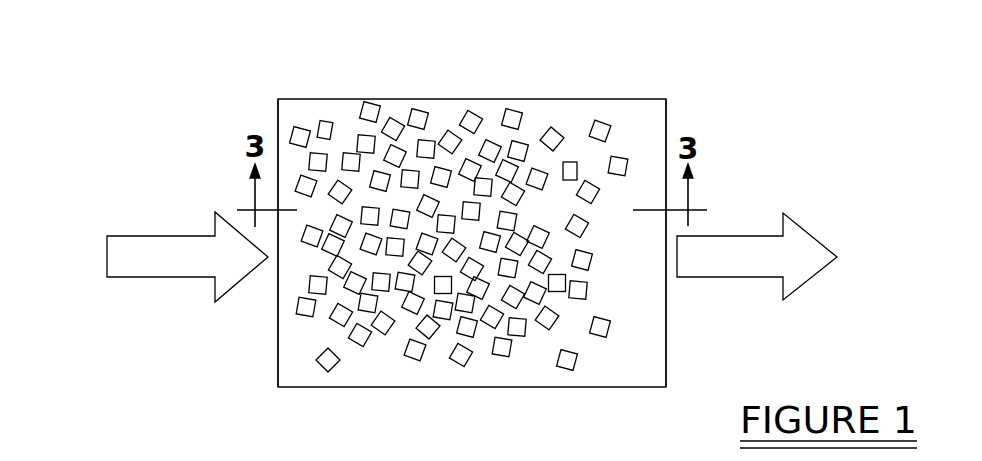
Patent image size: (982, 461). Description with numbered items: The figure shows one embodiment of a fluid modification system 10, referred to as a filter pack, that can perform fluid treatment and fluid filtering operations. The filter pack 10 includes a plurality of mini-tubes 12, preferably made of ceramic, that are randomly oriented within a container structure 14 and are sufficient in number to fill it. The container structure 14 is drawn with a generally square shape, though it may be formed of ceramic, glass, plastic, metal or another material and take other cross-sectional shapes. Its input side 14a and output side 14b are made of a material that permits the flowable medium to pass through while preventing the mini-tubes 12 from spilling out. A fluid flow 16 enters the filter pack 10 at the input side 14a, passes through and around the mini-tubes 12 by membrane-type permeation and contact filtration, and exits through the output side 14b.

The fluid modification system 10 is at (274, 65).
The mini-tubes 12 is at (325, 124).
The container structure 14 is at (293, 391).
The input side 14a is at (278, 344).
The output side 14b is at (666, 123).
The fluid flow 16 is at (127, 247).